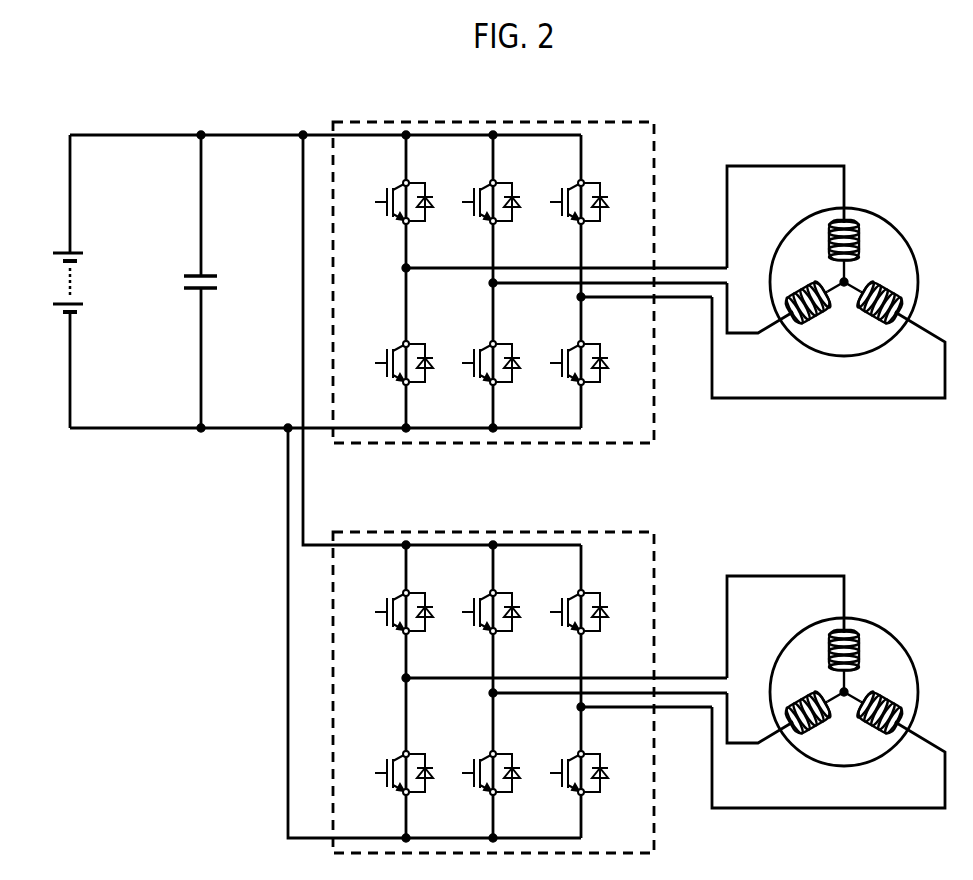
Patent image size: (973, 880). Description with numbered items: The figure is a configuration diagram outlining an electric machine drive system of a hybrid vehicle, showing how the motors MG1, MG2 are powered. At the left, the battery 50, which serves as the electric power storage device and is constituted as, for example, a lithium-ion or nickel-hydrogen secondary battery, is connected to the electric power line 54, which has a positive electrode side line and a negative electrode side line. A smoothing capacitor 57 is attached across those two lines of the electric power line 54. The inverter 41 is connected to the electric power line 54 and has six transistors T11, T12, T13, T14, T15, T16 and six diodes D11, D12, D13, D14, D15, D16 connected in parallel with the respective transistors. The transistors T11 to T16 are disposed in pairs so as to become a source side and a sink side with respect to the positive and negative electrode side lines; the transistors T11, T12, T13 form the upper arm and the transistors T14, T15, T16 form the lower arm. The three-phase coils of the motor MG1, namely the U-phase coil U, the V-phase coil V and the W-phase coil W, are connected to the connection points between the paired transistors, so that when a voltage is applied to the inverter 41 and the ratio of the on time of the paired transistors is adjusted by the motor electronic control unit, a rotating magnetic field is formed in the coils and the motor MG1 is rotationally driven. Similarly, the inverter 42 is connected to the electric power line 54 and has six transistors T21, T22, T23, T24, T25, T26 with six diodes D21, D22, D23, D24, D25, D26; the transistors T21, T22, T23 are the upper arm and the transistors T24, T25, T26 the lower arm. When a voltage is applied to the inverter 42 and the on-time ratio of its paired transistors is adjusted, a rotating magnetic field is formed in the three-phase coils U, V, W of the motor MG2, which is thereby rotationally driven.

The battery 50 is at (63, 252).
The smoothing capacitor 57 is at (208, 277).
The electric power line 54 is at (275, 135).
The inverter 41 is at (493, 120).
The inverter 42 is at (488, 528).
The transistor T11 is at (383, 196).
The transistor T12 is at (470, 196).
The transistor T13 is at (558, 196).
The transistor T14 is at (383, 357).
The transistor T15 is at (470, 357).
The transistor T16 is at (558, 357).
The diode D11 is at (423, 209).
The diode D12 is at (510, 209).
The diode D13 is at (598, 209).
The diode D14 is at (423, 370).
The diode D15 is at (510, 370).
The diode D16 is at (598, 370).
The transistor T21 is at (383, 606).
The transistor T22 is at (470, 606).
The transistor T23 is at (558, 606).
The transistor T24 is at (383, 767).
The transistor T25 is at (470, 767).
The transistor T26 is at (558, 767).
The diode D21 is at (423, 619).
The diode D22 is at (510, 619).
The diode D23 is at (598, 619).
The diode D24 is at (423, 780).
The diode D25 is at (510, 780).
The diode D26 is at (598, 780).
The motor MG1 is at (828, 274).
The motor MG2 is at (878, 623).
The U-phase coil U is at (839, 231).
The V-phase coil V is at (799, 297).
The W-phase coil W is at (890, 297).